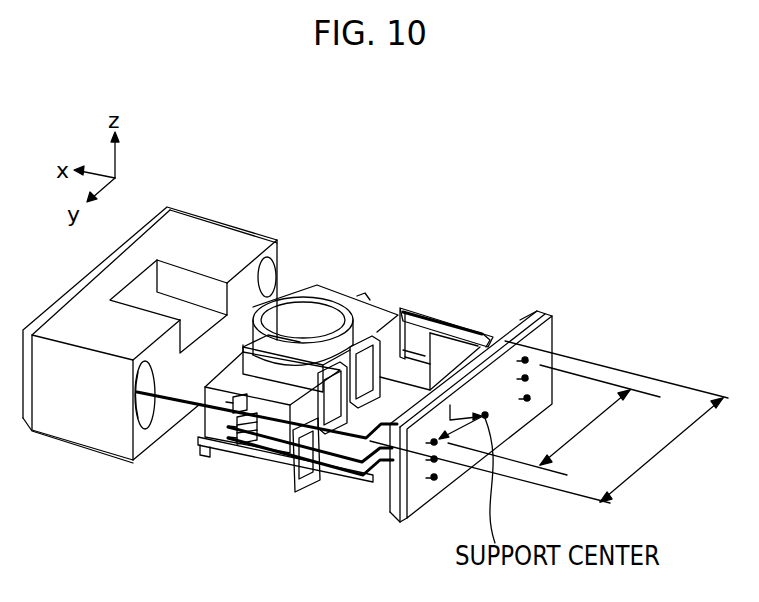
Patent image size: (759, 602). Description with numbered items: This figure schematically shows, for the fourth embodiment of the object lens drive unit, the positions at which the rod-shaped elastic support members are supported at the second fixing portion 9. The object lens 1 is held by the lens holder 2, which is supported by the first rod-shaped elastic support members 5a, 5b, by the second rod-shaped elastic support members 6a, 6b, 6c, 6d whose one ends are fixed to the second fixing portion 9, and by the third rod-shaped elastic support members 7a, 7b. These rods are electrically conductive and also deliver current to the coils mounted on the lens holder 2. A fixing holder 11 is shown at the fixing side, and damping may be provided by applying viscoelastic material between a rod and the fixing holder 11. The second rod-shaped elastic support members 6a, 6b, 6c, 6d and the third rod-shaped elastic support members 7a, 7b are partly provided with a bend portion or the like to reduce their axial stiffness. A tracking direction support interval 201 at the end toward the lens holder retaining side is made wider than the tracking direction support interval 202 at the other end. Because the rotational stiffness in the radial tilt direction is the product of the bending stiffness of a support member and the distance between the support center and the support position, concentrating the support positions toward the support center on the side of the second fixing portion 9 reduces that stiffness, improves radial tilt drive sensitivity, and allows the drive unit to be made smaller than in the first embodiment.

The object lens 1 is at (295, 316).
The lens holder 2 is at (347, 293).
The first rod-shaped elastic support member 5a is at (190, 410).
The first rod-shaped elastic support member 5b is at (278, 297).
The second rod-shaped elastic support member 6a is at (350, 473).
The second rod-shaped elastic support member 6b is at (327, 467).
The second rod-shaped elastic support member 6c is at (462, 318).
The second rod-shaped elastic support member 6d is at (423, 337).
The third rod-shaped elastic support member 7a is at (253, 447).
The third rod-shaped elastic support member 7b is at (413, 357).
The second fixing portion 9 is at (415, 510).
The fixing holder 11 is at (540, 311).
The tracking direction support interval 201 is at (549, 422).
The tracking direction support interval 202 is at (554, 420).